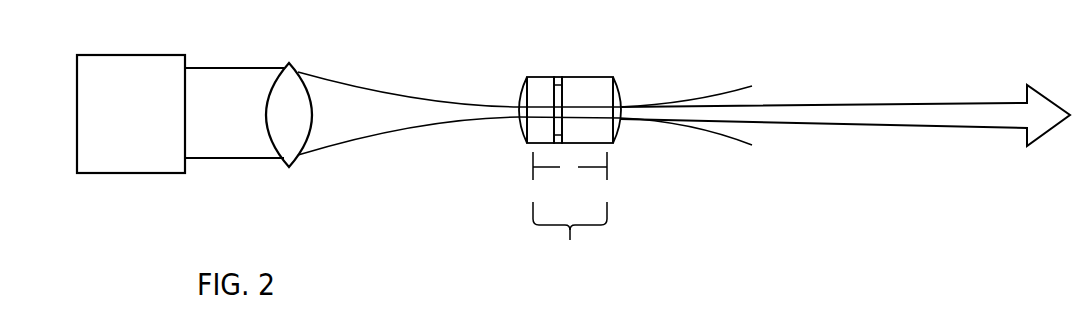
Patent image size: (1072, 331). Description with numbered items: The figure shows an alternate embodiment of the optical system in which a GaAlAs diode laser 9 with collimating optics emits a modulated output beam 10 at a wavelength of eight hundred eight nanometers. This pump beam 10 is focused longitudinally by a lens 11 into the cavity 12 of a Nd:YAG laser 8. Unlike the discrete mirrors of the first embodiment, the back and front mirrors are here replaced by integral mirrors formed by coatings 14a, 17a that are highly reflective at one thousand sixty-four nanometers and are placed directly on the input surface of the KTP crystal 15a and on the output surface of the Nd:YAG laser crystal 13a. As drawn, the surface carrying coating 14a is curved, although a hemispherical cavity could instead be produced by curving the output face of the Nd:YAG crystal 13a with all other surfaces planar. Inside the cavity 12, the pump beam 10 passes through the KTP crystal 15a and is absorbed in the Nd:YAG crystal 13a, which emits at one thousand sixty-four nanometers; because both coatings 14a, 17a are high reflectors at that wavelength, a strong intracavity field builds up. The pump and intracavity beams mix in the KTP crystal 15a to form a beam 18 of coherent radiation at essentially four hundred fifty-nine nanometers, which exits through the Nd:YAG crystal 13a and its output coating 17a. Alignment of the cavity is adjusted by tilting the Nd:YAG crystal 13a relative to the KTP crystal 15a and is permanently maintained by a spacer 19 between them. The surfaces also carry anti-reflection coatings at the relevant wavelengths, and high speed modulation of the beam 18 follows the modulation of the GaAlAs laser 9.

The GaAlAs diode laser 9 is at (139, 167).
The modulated output beam 10 is at (234, 113).
The lens 11 is at (281, 120).
The coating 14a is at (523, 83).
The KTP crystal 15a is at (540, 77).
The spacer 19 is at (557, 77).
The Nd:YAG laser crystal 13a is at (584, 77).
The coating 17a is at (618, 83).
The beam 18 is at (845, 115).
The cavity 12 is at (584, 190).
The Nd:YAG laser 8 is at (570, 238).